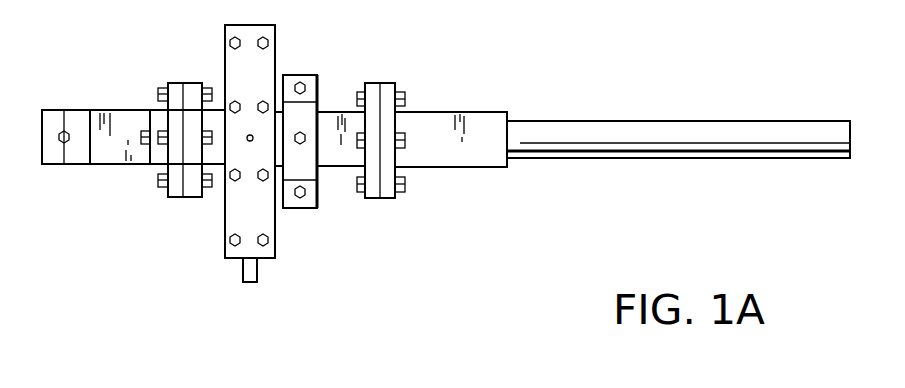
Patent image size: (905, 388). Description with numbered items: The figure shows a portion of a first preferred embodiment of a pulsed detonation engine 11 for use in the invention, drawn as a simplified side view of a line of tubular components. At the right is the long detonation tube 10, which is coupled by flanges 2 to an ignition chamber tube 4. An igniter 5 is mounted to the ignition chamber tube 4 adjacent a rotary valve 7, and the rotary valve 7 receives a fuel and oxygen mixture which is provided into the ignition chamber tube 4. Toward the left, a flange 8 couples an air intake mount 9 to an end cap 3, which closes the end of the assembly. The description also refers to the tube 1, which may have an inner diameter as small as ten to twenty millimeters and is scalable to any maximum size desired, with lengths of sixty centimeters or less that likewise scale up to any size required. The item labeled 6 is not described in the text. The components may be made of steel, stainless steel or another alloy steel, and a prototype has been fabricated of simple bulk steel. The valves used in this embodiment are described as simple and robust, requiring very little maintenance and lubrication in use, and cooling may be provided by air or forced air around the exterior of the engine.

The tube 1 is at (700, 158).
The flanges 2 is at (388, 198).
The end cap 3 is at (58, 164).
The ignition chamber tube 4 is at (340, 166).
The igniter 5 is at (307, 75).
The mounting plate 6 is at (272, 258).
The rotary valve 7 is at (250, 282).
The flange 8 is at (176, 197).
The air intake mount 9 is at (112, 110).
The detonation tube 10 is at (683, 132).
The pulsed detonation engine 11 is at (478, 243).